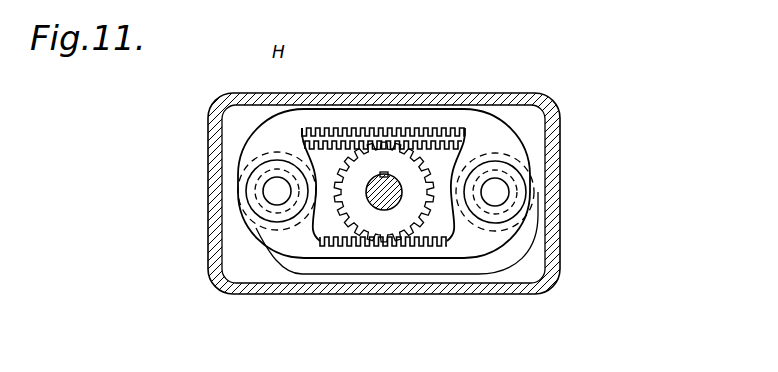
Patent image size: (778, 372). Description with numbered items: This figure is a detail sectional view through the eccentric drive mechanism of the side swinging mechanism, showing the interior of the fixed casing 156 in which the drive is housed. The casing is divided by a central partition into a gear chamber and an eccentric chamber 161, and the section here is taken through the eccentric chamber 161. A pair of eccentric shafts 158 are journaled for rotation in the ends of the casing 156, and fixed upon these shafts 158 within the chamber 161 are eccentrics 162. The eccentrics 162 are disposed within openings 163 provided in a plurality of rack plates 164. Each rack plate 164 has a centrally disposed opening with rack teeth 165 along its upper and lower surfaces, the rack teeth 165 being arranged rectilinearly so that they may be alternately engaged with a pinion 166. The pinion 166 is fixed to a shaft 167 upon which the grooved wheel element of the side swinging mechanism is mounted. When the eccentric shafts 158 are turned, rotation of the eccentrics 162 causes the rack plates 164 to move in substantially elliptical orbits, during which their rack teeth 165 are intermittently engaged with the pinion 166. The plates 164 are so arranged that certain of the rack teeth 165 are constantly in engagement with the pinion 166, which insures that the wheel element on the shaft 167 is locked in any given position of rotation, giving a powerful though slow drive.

The casing 156 is at (224, 288).
The eccentric shafts 158 is at (270, 197).
The eccentric chamber 161 is at (534, 130).
The eccentrics 162 is at (497, 158).
The openings 163 is at (457, 230).
The rack plates 164 is at (437, 112).
The rack teeth 165 is at (360, 127).
The pinion 166 is at (357, 208).
The shaft 167 is at (403, 200).